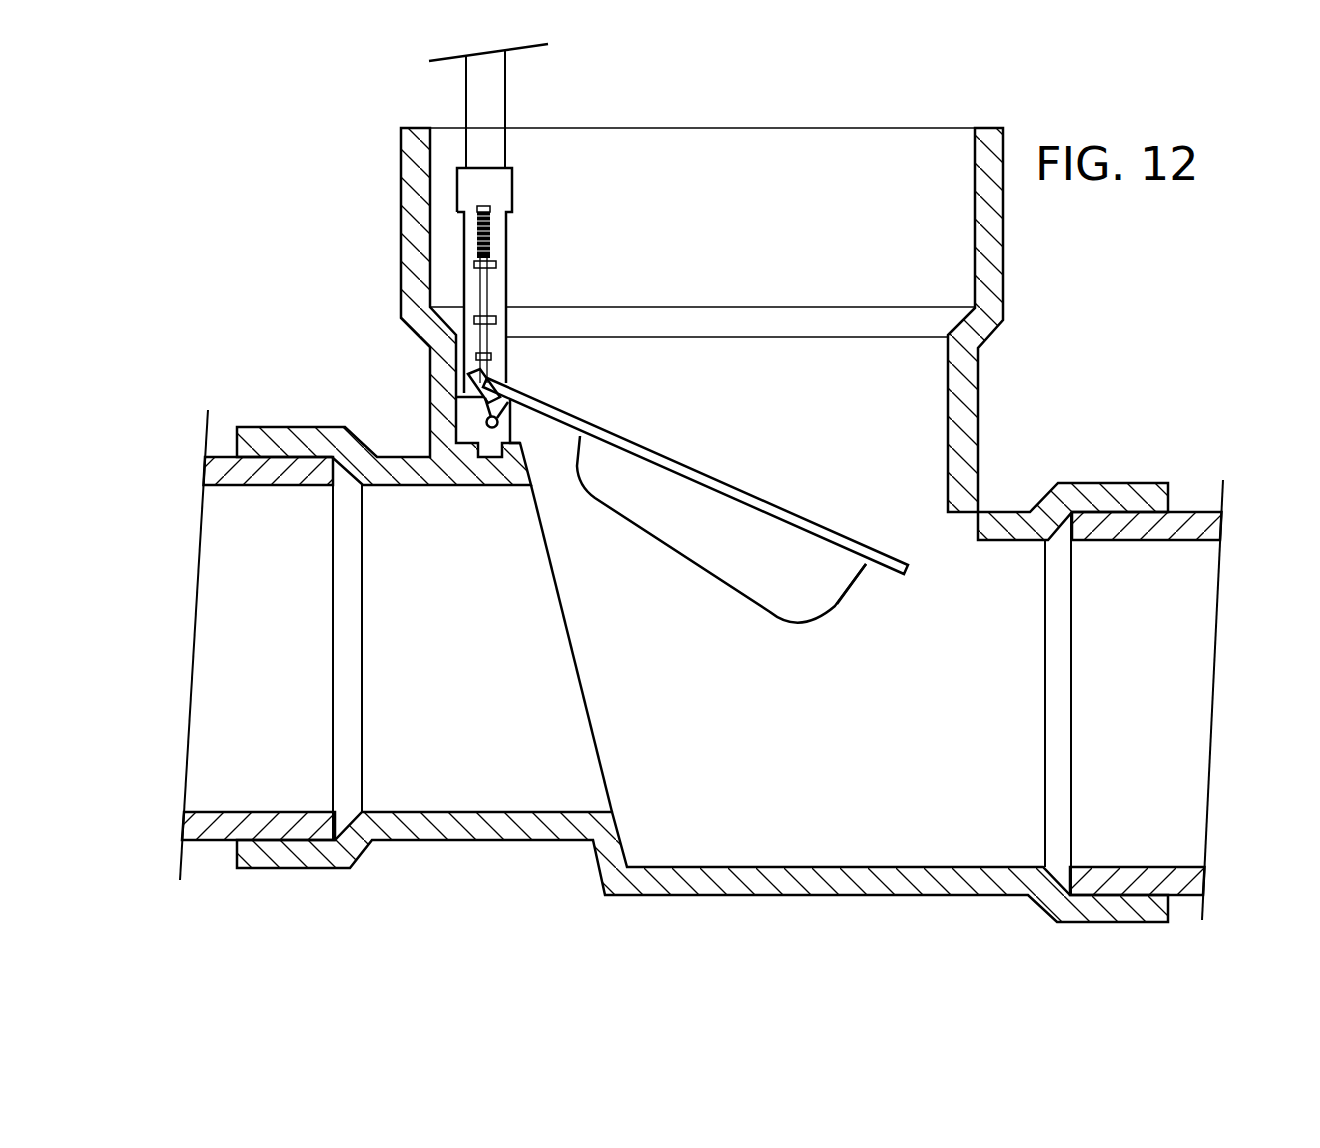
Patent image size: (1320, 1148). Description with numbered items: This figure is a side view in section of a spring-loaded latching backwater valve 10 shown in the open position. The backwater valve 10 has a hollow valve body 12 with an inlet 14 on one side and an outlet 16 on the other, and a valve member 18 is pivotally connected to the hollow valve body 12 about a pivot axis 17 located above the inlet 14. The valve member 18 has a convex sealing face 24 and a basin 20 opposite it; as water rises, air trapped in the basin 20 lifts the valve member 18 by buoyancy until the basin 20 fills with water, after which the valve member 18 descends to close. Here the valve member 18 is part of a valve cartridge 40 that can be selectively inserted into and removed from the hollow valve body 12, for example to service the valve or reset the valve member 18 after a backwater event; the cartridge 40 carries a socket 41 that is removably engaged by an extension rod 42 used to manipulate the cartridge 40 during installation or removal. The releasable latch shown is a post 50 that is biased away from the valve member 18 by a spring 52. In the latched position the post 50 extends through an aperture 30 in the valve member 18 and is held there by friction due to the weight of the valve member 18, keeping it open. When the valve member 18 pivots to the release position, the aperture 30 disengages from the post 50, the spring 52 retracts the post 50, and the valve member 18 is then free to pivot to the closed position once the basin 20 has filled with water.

The backwater valve 10 is at (320, 257).
The hollow valve body 12 is at (428, 388).
The inlet 14 is at (432, 668).
The outlet 16 is at (975, 690).
The pivot axis 17 is at (477, 423).
The valve member 18 is at (812, 593).
The basin 20 is at (757, 533).
The convex sealing face 24 is at (657, 538).
The aperture 30 is at (492, 392).
The valve cartridge 40 is at (616, 279).
The socket 41 is at (505, 188).
The extension rod 42 is at (480, 108).
The post 50 is at (484, 339).
The spring 52 is at (490, 235).